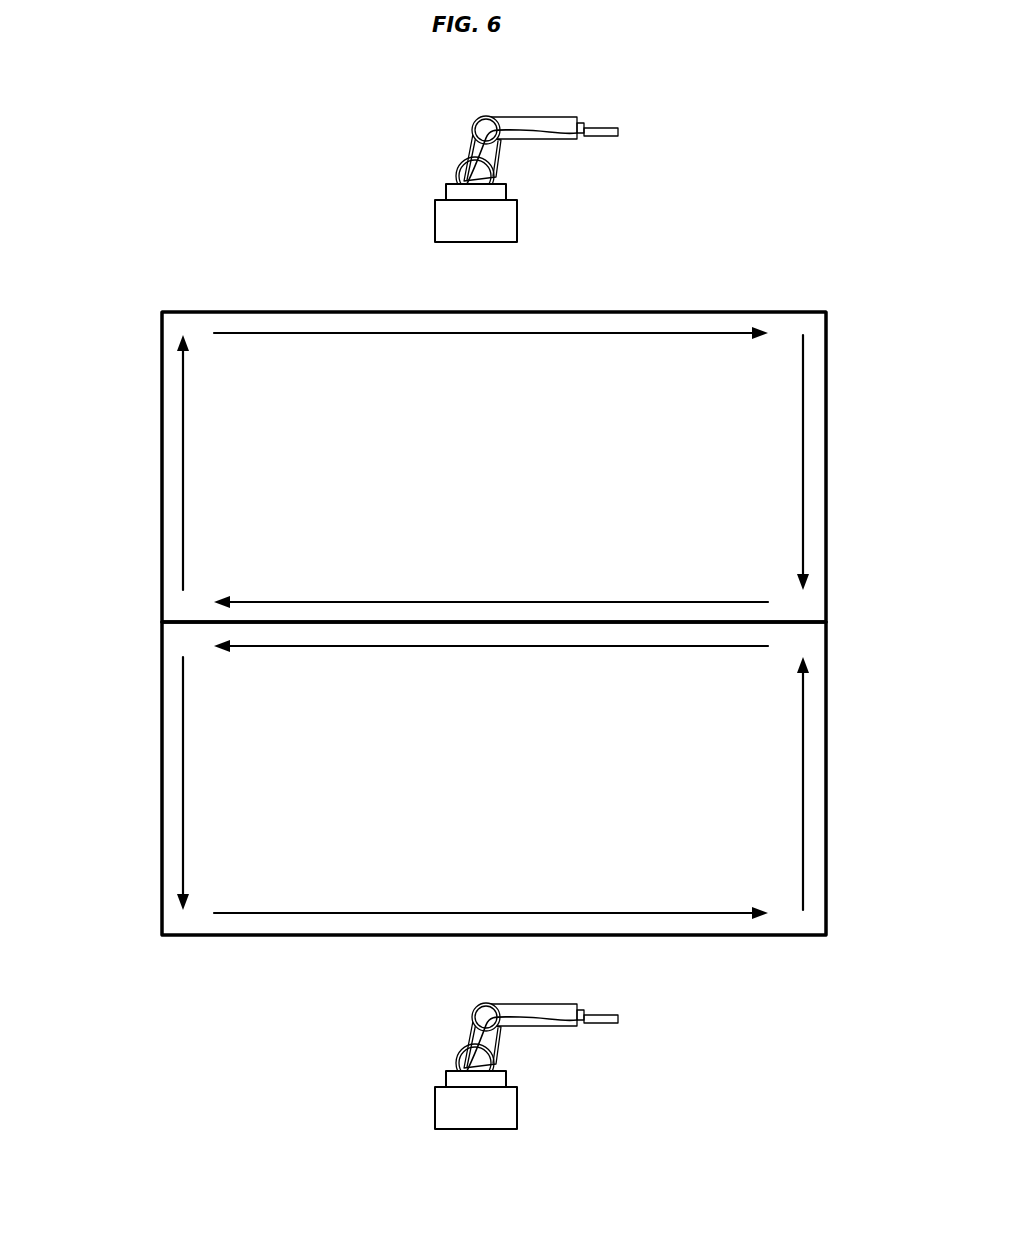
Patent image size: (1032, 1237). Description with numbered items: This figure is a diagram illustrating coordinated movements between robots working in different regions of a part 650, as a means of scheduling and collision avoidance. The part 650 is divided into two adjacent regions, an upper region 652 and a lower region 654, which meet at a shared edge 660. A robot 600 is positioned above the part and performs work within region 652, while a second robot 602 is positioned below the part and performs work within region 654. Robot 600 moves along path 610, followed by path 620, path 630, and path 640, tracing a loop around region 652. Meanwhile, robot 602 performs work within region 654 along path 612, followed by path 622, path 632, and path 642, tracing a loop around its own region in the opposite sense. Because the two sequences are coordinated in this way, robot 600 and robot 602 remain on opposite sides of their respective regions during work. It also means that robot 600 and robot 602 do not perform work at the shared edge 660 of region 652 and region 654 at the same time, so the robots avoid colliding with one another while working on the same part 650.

The robot 600 is at (434, 235).
The robot 602 is at (434, 1107).
The path 610 is at (492, 334).
The path 612 is at (492, 647).
The path 620 is at (803, 457).
The path 622 is at (184, 783).
The path 630 is at (495, 601).
The path 632 is at (500, 912).
The path 640 is at (184, 451).
The path 642 is at (803, 790).
The part 650 is at (128, 248).
The region 652 is at (172, 476).
The region 654 is at (172, 761).
The shared edge 660 is at (793, 622).